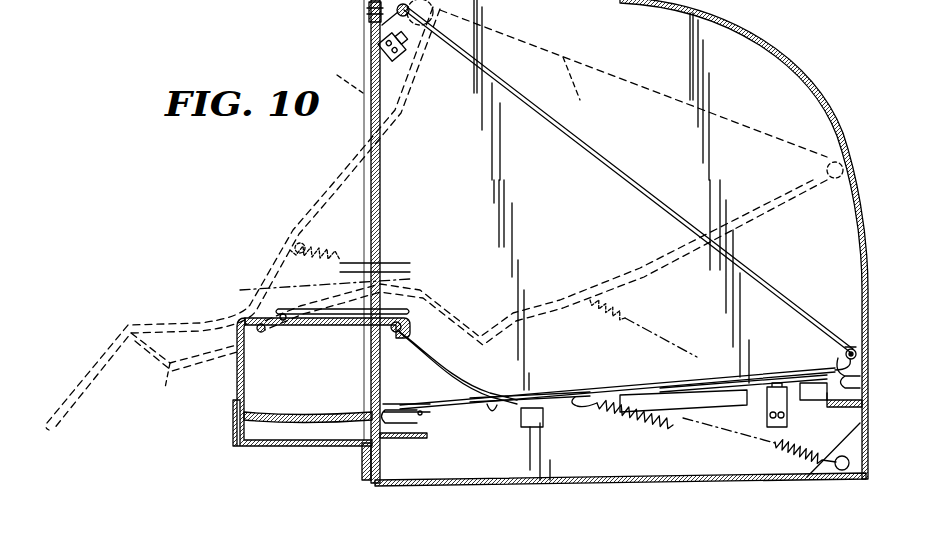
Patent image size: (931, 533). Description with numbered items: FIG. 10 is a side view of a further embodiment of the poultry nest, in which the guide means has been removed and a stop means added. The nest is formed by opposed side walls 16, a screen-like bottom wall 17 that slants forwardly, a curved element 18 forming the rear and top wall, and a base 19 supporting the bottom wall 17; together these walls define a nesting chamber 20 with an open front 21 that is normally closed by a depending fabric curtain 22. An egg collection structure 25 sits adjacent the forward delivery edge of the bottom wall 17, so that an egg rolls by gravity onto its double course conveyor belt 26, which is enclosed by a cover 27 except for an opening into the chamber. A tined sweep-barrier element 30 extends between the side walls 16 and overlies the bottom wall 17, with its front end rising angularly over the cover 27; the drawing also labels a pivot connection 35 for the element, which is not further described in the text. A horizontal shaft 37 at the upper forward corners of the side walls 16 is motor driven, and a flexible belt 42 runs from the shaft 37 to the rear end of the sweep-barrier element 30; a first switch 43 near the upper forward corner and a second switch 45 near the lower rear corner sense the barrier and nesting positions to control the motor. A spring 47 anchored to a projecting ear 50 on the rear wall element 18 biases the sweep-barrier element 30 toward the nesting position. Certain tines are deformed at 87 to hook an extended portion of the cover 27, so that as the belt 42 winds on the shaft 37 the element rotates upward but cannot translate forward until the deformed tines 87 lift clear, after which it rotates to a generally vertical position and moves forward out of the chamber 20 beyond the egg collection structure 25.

The side wall 16 is at (742, 72).
The bottom wall 17 is at (462, 426).
The curved element 18 is at (818, 78).
The base 19 is at (404, 440).
The nesting chamber 20 is at (770, 78).
The open front 21 is at (364, 182).
The fabric curtain 22 is at (370, 150).
The egg collection structure 25 is at (236, 372).
The conveyor belt 26 is at (272, 430).
The cover 27 is at (305, 325).
The sweep-barrier element 30 is at (392, 108).
The pivot 35 is at (462, 8).
The shaft 37 is at (375, 28).
The flexible belt 42 is at (530, 86).
The first switch 43 is at (395, 60).
The second switch 45 is at (786, 402).
The spring 47 is at (343, 258).
The projecting ear 50 is at (841, 471).
The deformed tines 87 is at (403, 368).